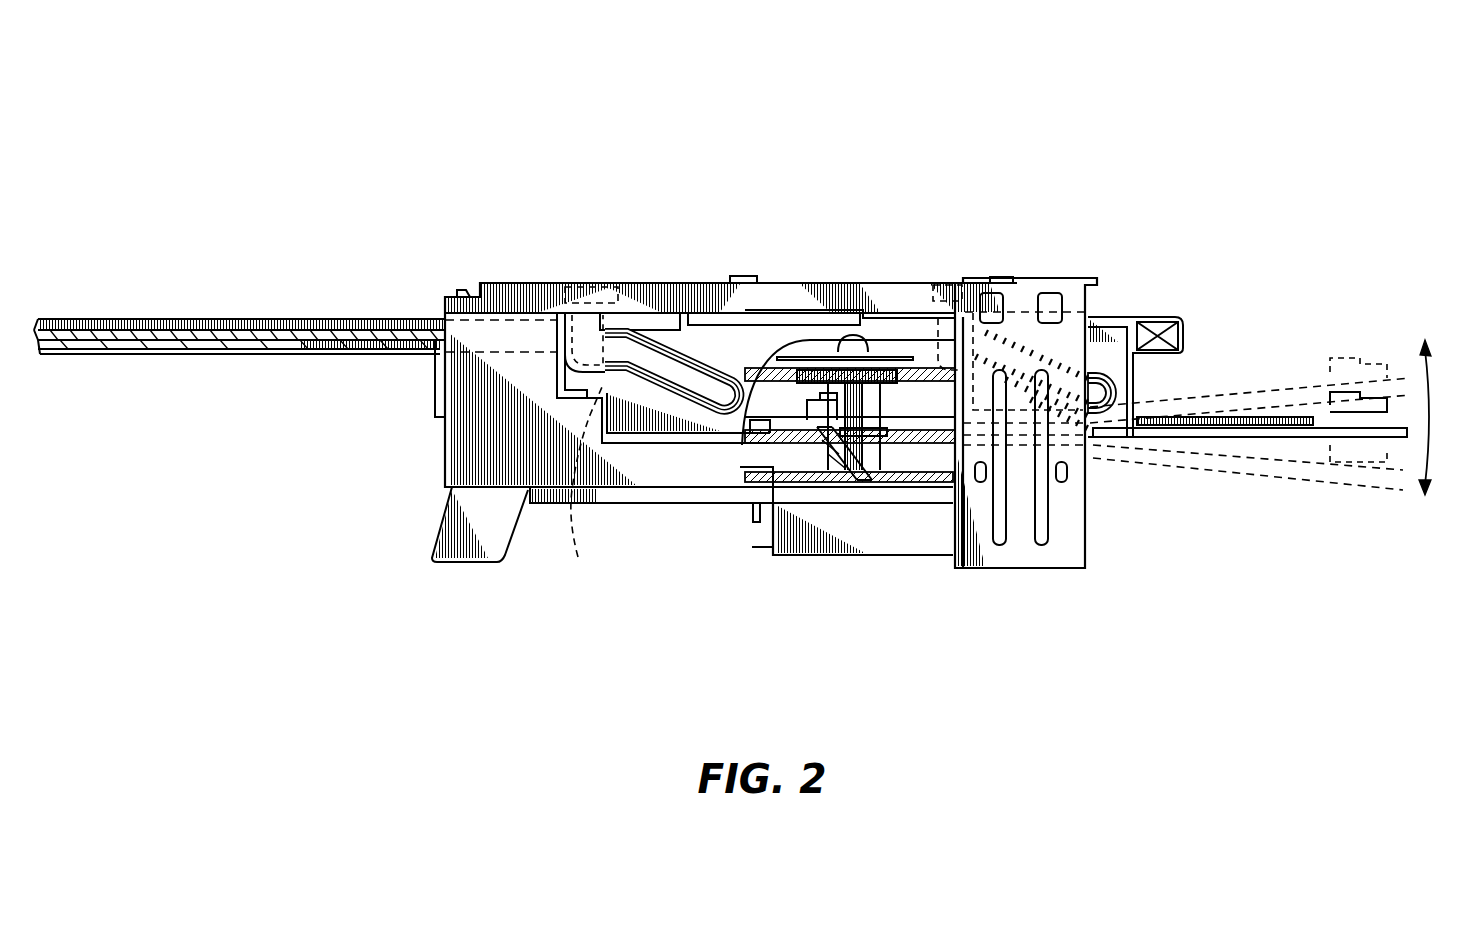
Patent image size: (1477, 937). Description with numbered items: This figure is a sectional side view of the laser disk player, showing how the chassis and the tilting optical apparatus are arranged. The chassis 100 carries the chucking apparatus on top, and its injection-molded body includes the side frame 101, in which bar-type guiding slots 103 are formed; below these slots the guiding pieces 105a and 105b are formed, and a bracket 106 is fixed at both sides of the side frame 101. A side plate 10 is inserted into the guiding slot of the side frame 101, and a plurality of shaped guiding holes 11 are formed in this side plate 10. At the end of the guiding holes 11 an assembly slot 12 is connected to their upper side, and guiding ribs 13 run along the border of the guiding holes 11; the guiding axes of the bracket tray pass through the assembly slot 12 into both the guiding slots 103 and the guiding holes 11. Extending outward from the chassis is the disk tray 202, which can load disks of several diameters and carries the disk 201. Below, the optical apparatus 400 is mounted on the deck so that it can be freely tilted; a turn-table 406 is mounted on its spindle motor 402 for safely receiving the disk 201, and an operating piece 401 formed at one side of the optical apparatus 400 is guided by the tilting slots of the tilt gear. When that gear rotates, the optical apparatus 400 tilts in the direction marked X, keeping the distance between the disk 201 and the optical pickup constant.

The side plate 10 is at (1198, 298).
The guiding holes 11 is at (1020, 365).
The assembly slot 12 is at (588, 330).
The guiding ribs 13 is at (1108, 383).
The chassis 100 is at (420, 392).
The side frame 101 is at (437, 460).
The guiding slots 103 is at (598, 300).
The guiding piece 105a is at (503, 285).
The guiding piece 105b is at (555, 503).
The bracket 106 is at (1032, 553).
The disk 201 is at (120, 337).
The disk tray 202 is at (230, 319).
The optical apparatus 400 is at (1280, 437).
The operating piece 401 is at (817, 405).
The spindle motor 402 is at (913, 542).
The turn-table 406 is at (865, 350).